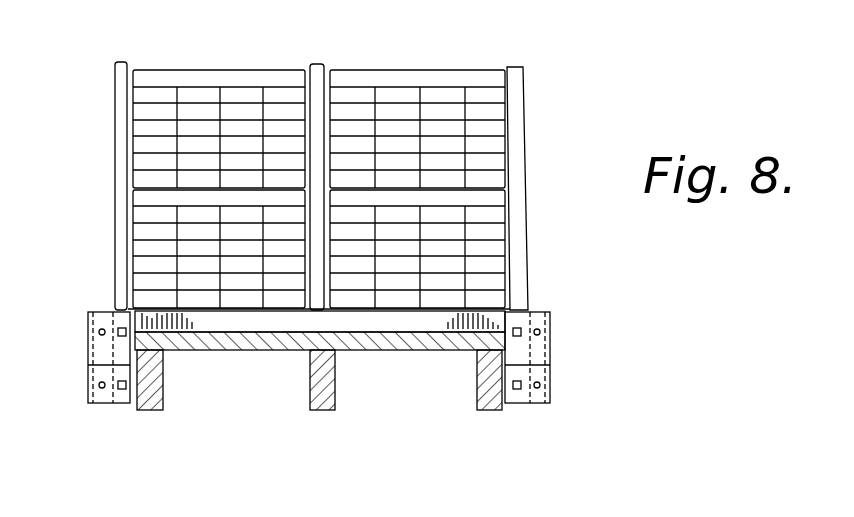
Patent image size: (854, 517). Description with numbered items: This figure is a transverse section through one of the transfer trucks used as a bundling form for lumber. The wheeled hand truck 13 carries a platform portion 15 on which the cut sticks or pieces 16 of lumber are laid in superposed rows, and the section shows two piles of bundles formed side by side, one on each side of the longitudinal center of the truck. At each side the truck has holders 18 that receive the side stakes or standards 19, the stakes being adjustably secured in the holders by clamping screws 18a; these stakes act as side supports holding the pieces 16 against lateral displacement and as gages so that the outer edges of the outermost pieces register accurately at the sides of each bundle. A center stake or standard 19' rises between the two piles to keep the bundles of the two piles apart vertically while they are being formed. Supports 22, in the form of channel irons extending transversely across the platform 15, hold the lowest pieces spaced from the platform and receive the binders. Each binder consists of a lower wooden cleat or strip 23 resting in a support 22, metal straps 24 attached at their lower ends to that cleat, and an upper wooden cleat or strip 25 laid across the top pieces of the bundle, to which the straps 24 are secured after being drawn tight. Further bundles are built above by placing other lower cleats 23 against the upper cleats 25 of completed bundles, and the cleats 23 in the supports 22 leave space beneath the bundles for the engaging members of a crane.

The wheeled hand truck 13 is at (319, 383).
The platform portion 15 is at (256, 343).
The pieces of lumber 16 is at (245, 90).
The holders 18 is at (98, 312).
The clamping screws 18a is at (577, 314).
The stakes or standards 19 is at (323, 186).
The center stakes or standards 19' is at (336, 167).
The supports 22 is at (355, 325).
The lower wooden cleat or strip 23 is at (506, 309).
The metal straps 24 is at (503, 174).
The upper wooden cleat or strip 25 is at (192, 76).